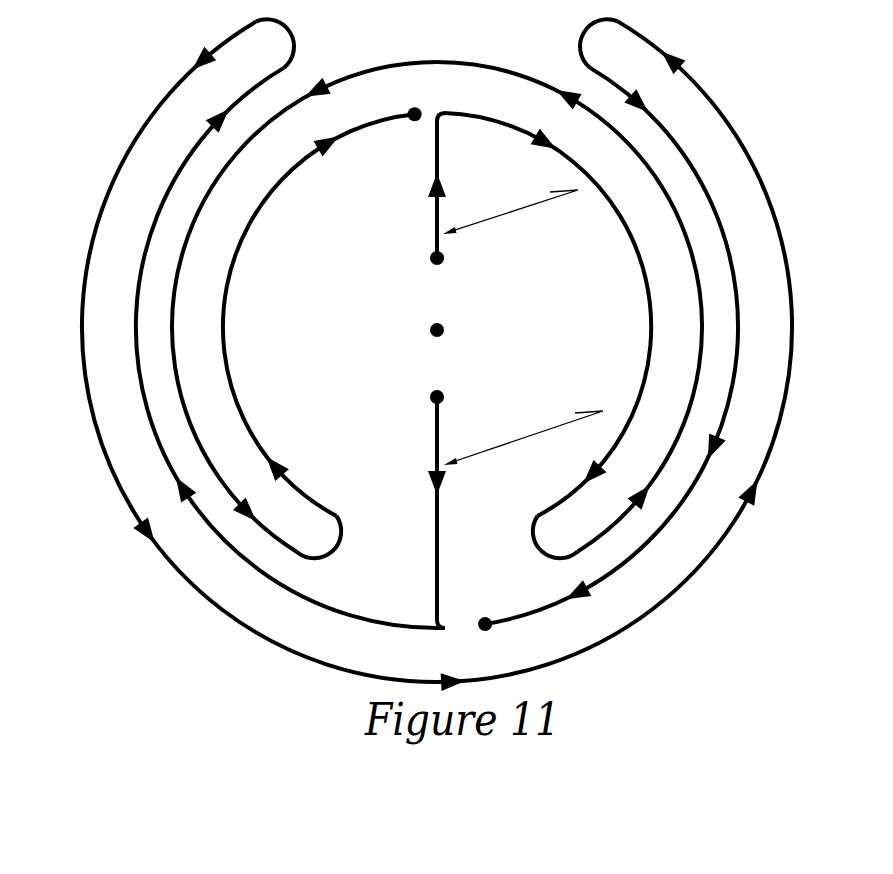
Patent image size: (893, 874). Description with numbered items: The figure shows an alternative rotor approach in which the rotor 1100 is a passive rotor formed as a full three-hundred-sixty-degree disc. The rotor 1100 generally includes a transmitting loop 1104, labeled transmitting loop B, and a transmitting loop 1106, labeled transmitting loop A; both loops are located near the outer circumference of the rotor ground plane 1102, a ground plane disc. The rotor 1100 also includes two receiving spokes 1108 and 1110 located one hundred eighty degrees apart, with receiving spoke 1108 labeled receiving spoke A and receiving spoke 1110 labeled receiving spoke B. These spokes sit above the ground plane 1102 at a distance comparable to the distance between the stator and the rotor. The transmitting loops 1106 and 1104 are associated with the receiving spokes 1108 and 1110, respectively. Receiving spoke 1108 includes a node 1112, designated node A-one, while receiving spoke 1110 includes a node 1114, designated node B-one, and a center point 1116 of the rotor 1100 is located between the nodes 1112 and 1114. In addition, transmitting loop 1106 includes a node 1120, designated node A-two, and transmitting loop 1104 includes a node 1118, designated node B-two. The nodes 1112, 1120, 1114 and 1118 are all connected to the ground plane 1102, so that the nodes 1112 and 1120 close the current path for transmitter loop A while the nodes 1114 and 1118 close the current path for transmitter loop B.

The rotor 1100 is at (168, 82).
The ground plane 1102 is at (582, 336).
The transmitting loop 1104 is at (686, 103).
The transmitting loop 1106 is at (505, 97).
The receiving spoke 1108 is at (437, 208).
The receiving spoke 1110 is at (437, 454).
The node 1112 is at (430, 263).
The node 1114 is at (430, 399).
The center point 1116 is at (430, 330).
The node 1118 is at (483, 596).
The node 1120 is at (393, 145).